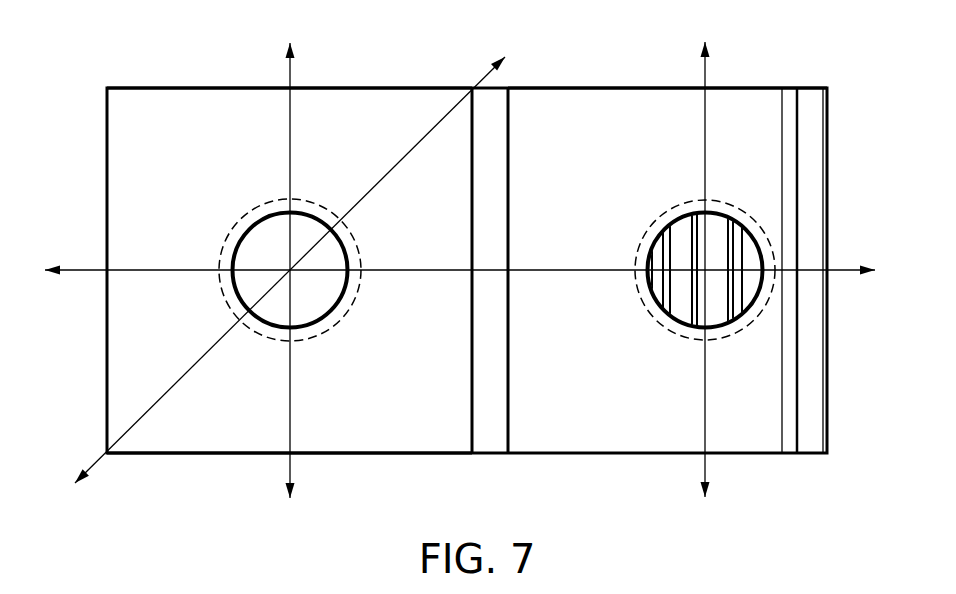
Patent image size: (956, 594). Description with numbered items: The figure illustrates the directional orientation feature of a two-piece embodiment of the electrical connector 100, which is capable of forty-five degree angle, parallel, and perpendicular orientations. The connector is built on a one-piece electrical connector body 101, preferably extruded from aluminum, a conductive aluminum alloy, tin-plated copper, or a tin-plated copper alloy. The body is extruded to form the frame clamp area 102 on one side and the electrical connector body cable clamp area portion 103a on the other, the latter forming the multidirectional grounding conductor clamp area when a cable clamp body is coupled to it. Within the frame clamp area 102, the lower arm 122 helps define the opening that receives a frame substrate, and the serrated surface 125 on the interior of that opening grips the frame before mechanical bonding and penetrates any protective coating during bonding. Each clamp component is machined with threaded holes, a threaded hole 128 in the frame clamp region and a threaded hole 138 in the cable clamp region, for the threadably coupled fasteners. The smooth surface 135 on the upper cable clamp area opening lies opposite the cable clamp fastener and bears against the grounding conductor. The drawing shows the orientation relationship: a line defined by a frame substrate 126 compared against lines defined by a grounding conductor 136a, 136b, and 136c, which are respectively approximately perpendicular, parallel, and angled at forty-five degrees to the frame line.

The electrical connector 100 is at (570, 468).
The electrical connector body 101 is at (568, 85).
The frame clamp area 102 is at (786, 430).
The electrical connector body cable clamp area portion 103a is at (402, 407).
The lower arm 122 is at (797, 150).
The serrated surface 125 is at (737, 258).
The line defined by a frame substrate 126 is at (707, 70).
The threaded hole 128 is at (711, 296).
The smooth surface 135 is at (346, 114).
The line defined by a grounding conductor 136a is at (840, 275).
The line defined by a grounding conductor 136b is at (283, 465).
The line defined by a grounding conductor 136c is at (98, 467).
The threaded hole 138 is at (265, 250).